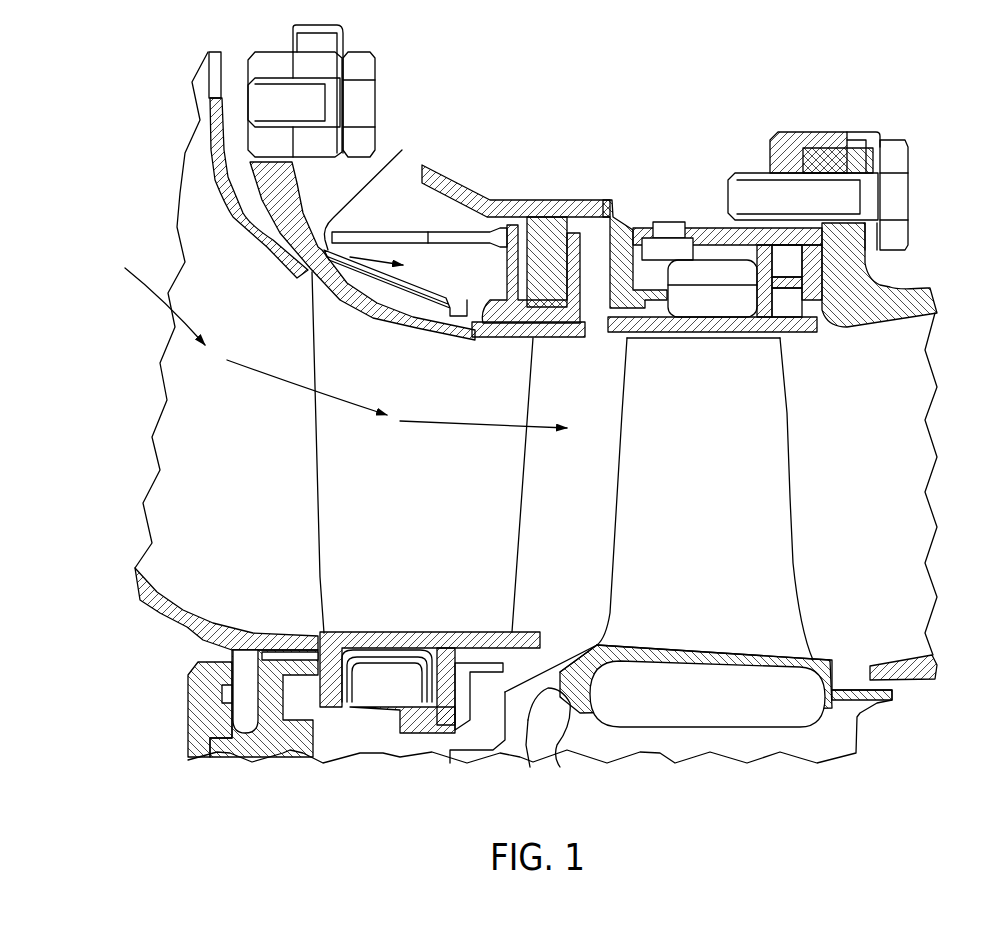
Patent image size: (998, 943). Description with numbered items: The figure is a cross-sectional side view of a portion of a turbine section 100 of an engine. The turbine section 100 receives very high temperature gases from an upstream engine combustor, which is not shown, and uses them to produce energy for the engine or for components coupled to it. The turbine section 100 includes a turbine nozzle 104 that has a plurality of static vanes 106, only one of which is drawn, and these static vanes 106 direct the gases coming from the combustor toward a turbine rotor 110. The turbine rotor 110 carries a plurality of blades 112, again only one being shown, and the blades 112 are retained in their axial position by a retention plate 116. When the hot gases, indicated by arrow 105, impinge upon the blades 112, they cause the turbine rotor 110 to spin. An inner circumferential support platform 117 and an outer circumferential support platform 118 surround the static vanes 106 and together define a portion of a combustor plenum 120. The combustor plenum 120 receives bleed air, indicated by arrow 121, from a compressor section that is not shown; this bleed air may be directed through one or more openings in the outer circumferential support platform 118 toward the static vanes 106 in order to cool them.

The turbine section 100 is at (660, 117).
The turbine nozzle 104 is at (310, 493).
The arrow 105 is at (268, 378).
The static vanes 106 is at (385, 603).
The turbine rotor 110 is at (787, 737).
The blades 112 is at (723, 463).
The retention plate 116 is at (513, 713).
The inner circumferential support platform 117 is at (509, 640).
The outer circumferential support platform 118 is at (445, 498).
The combustor plenum 120 is at (501, 116).
The arrow 121 is at (357, 188).